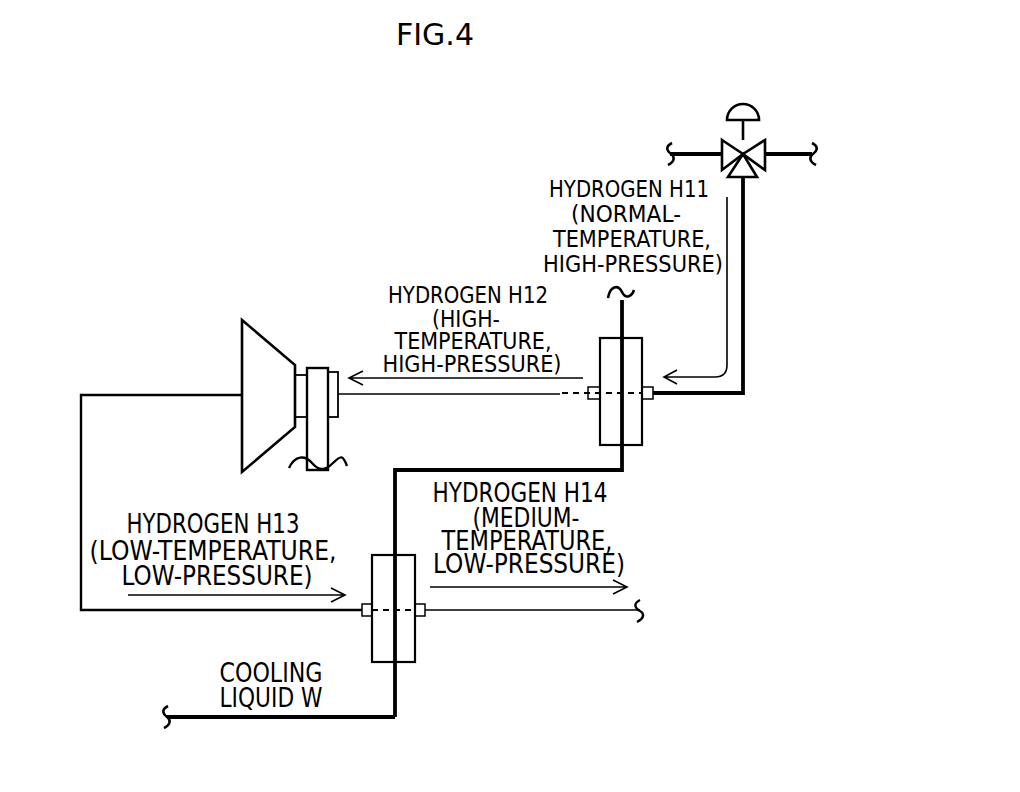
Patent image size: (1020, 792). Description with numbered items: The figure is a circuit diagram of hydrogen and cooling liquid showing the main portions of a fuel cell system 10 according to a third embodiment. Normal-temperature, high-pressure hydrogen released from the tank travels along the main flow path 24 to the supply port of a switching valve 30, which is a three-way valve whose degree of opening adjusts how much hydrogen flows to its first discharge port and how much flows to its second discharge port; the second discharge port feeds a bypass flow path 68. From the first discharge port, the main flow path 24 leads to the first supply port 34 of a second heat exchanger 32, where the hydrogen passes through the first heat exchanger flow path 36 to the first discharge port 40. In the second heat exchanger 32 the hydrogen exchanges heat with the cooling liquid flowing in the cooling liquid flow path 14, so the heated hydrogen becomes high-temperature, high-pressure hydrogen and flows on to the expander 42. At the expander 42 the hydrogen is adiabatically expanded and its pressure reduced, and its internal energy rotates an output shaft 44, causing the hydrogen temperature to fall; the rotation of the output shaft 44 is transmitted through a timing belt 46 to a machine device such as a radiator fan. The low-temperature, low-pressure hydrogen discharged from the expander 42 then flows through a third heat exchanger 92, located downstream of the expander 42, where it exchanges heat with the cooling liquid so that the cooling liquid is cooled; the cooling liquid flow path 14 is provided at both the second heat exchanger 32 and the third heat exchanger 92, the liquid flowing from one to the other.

The fuel cell system 10 is at (369, 175).
The switching valve 30 is at (779, 137).
The bypass flow path 68 is at (697, 138).
The main flow path 24 is at (754, 261).
The second heat exchanger 32 is at (656, 343).
The first supply port 34 is at (655, 400).
The first discharge port 40 is at (588, 400).
The first heat exchanger flow path 36 is at (623, 393).
The expander 42 is at (283, 345).
The output shaft 44 is at (338, 412).
The timing belt 46 is at (328, 440).
The third heat exchanger 92 is at (370, 542).
The cooling liquid flow path 14 is at (296, 731).